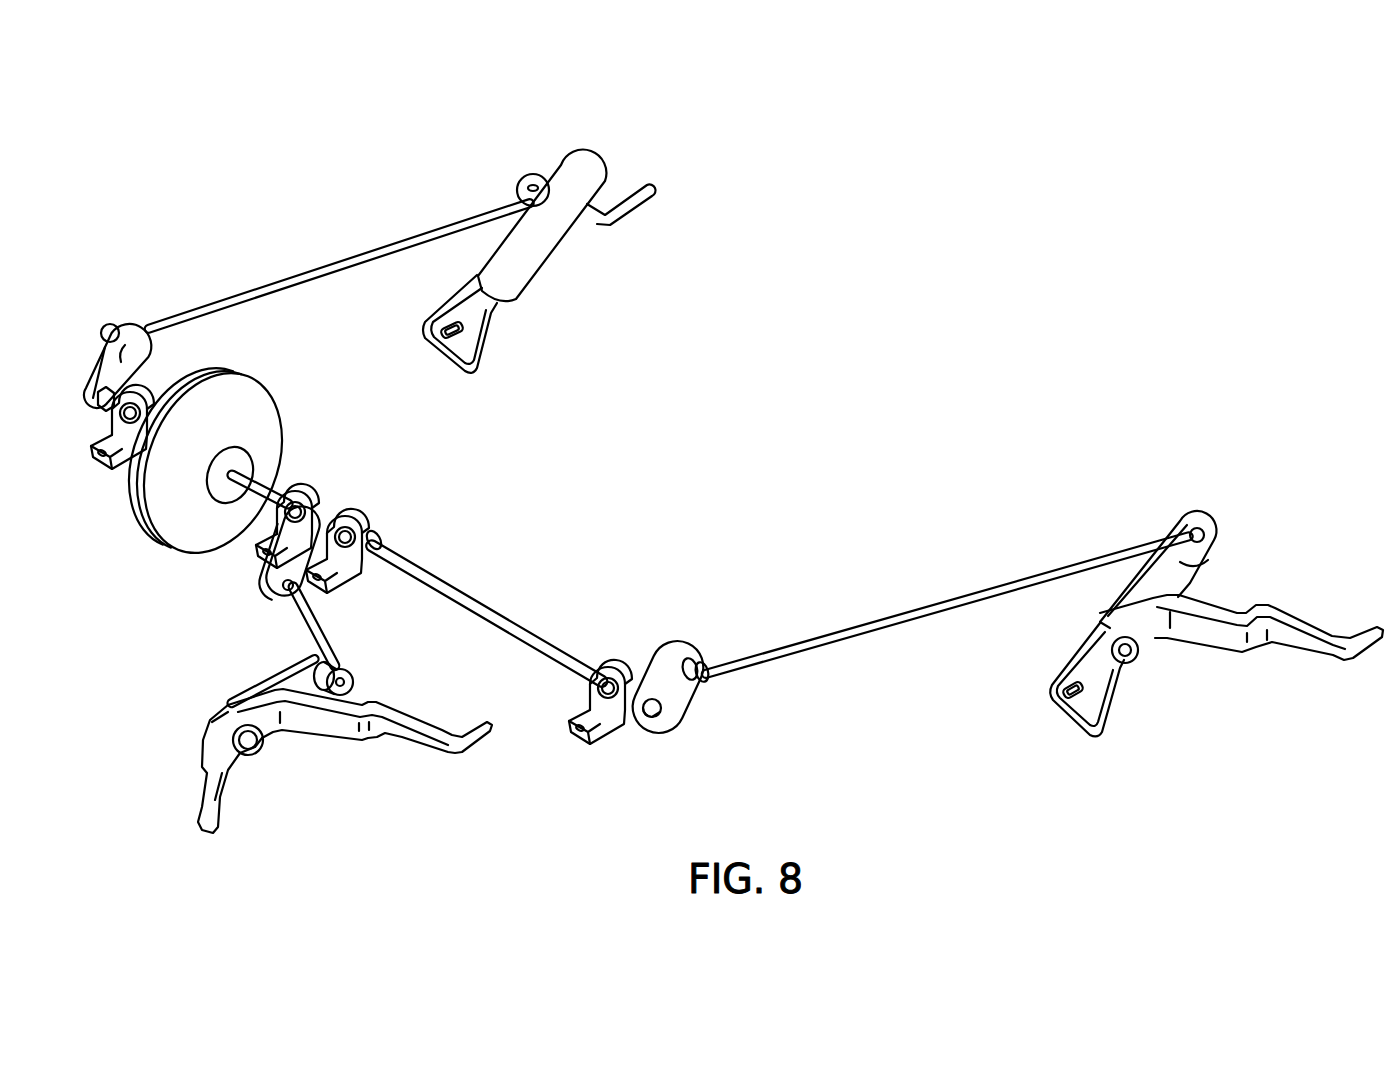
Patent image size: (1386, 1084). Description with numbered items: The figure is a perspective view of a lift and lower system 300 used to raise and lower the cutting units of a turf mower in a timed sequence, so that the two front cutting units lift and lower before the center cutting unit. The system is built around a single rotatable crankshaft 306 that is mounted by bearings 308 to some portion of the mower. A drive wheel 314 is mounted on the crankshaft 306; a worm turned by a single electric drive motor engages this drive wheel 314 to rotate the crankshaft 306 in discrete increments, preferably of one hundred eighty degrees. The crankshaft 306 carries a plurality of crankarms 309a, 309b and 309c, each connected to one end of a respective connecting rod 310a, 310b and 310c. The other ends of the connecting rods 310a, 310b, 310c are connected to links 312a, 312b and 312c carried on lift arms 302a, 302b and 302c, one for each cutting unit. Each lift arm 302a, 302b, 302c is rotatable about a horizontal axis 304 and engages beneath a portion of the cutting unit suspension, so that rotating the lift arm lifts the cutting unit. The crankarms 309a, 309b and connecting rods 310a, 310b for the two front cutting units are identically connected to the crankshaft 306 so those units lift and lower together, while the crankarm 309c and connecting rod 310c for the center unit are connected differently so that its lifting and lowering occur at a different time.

The lift and lower system 300 is at (780, 370).
The lift arm 302a is at (632, 186).
The lift arm 302b is at (1285, 618).
The lift arm 302c is at (403, 743).
The horizontal axis 304 is at (252, 748).
The crankshaft 306 is at (447, 580).
The bearings 308 is at (140, 398).
The crankarm 309a is at (121, 358).
The crankarm 309b is at (680, 695).
The crankarm 309c is at (280, 572).
The connecting rod 310a is at (300, 272).
The connecting rod 310b is at (848, 627).
The connecting rod 310c is at (318, 628).
The link 312a is at (567, 195).
The link 312b is at (1190, 565).
The link 312c is at (289, 678).
The drive wheel 314 is at (267, 397).